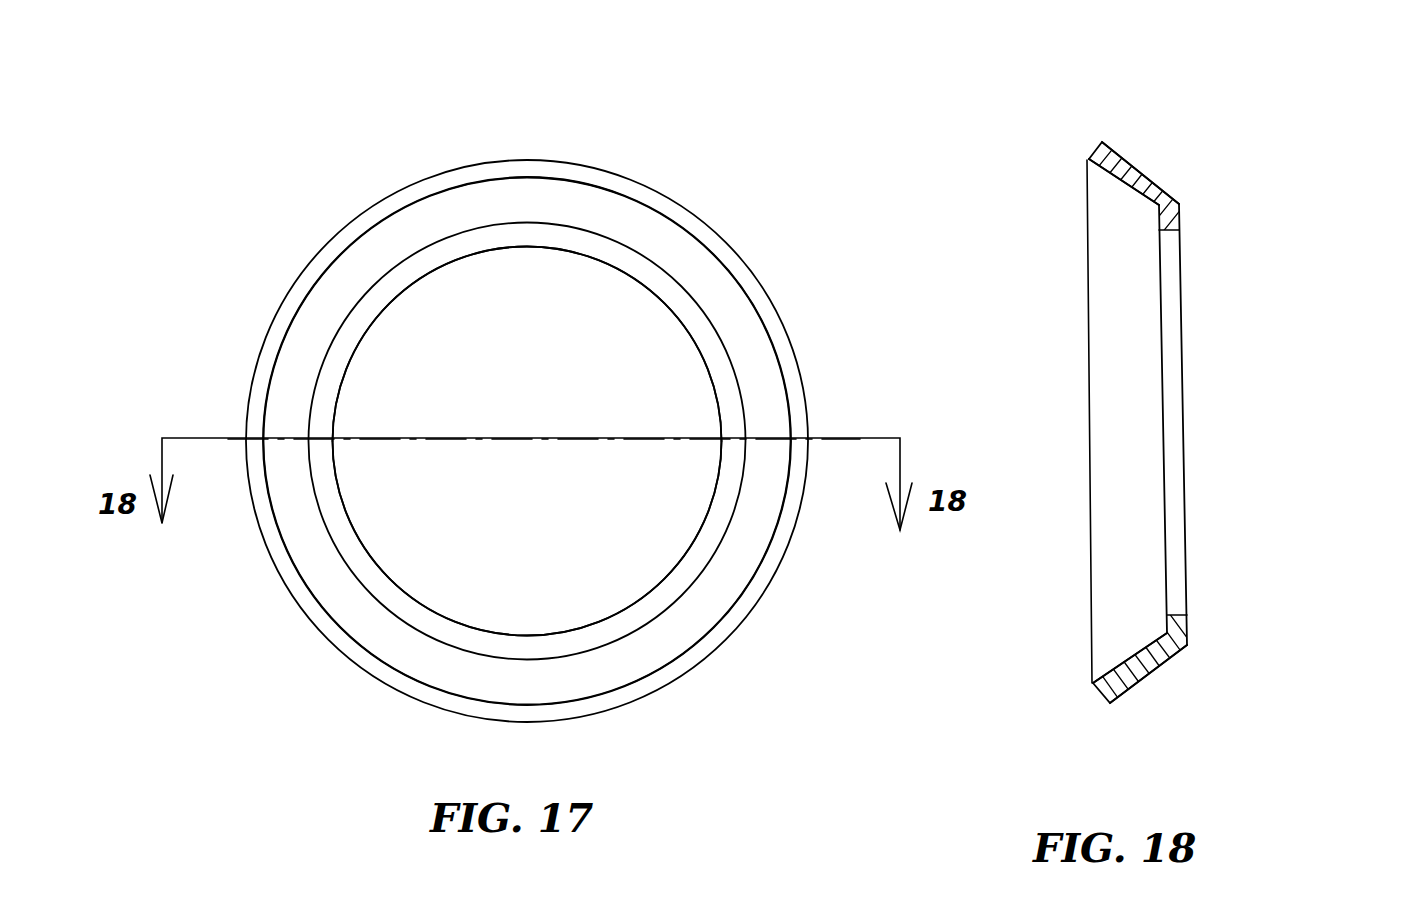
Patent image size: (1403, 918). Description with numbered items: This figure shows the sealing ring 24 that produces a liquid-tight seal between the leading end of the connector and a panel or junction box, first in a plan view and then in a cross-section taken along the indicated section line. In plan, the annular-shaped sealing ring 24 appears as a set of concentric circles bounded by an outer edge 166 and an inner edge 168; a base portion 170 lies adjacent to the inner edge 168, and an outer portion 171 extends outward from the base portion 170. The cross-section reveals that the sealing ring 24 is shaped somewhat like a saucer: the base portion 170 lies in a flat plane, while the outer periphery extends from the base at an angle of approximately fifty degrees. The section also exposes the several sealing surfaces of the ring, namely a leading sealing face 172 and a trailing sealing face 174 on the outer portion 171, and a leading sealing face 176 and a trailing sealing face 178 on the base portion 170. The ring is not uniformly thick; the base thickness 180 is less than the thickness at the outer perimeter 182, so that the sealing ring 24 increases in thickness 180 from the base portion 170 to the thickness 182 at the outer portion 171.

In FIG. 17, the sealing ring 24 is at (623, 133).
In FIG. 18, the sealing ring 24 is at (1265, 410).
In FIG. 17, the outer edge 166 is at (683, 205).
In FIG. 17, the inner edge 168 is at (540, 250).
In FIG. 17, the base portion 170 is at (680, 300).
In FIG. 18, the base portion 170 is at (1181, 224).
In FIG. 17, the outer portion 171 is at (753, 370).
In FIG. 18, the outer portion 171 is at (1133, 673).
In FIG. 17, the leading sealing face 172 is at (723, 303).
In FIG. 18, the leading sealing face 172 is at (1107, 192).
In FIG. 18, the trailing sealing face 174 is at (1140, 160).
In FIG. 17, the leading sealing face 176 is at (573, 640).
In FIG. 18, the leading sealing face 176 is at (1157, 626).
In FIG. 18, the trailing sealing face 178 is at (1190, 625).
In FIG. 18, the base thickness 180 is at (1172, 212).
In FIG. 18, the outer perimeter 182 is at (1097, 157).